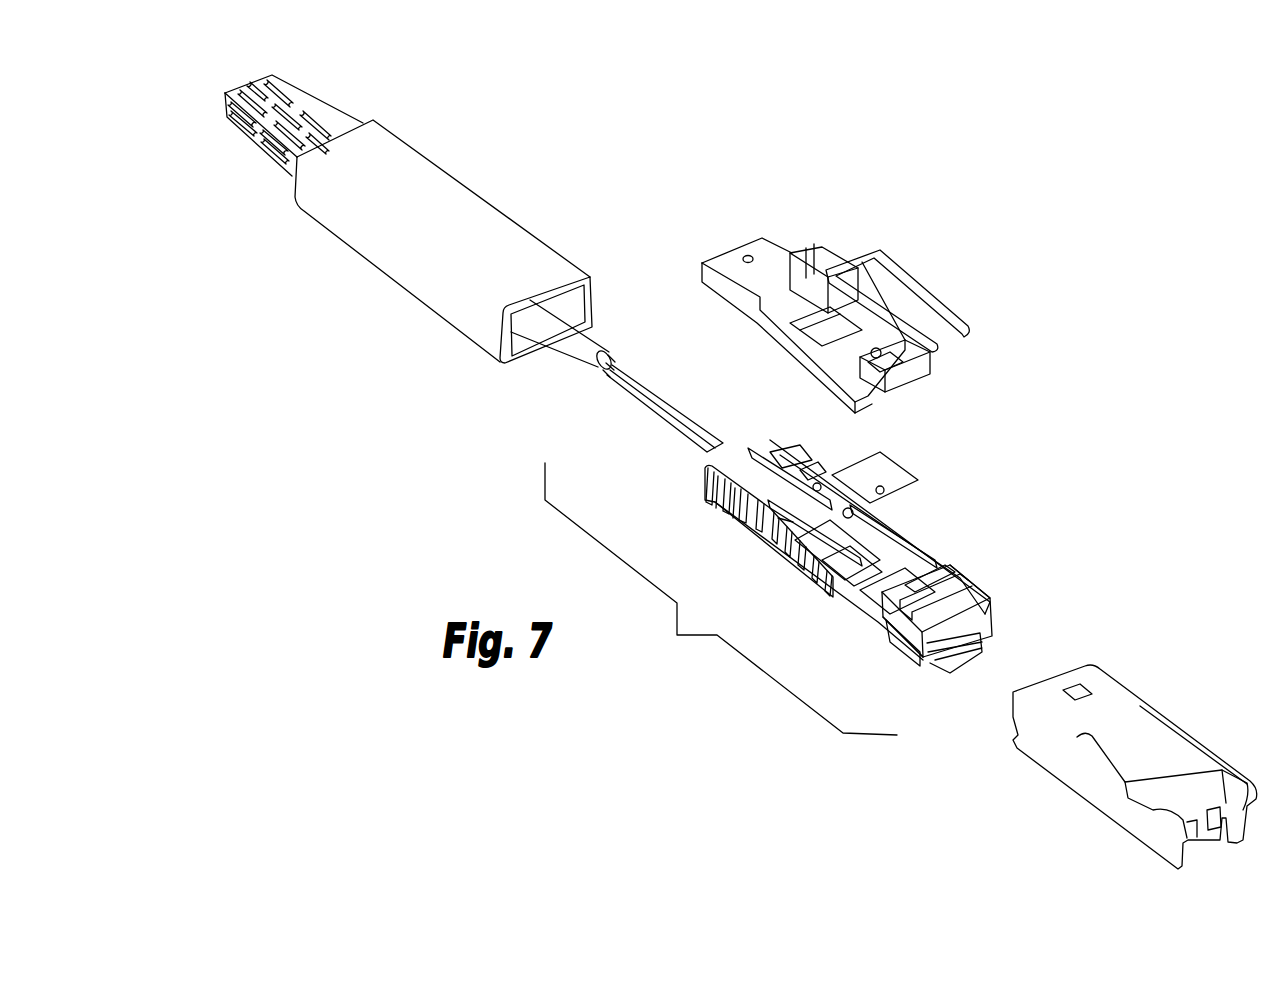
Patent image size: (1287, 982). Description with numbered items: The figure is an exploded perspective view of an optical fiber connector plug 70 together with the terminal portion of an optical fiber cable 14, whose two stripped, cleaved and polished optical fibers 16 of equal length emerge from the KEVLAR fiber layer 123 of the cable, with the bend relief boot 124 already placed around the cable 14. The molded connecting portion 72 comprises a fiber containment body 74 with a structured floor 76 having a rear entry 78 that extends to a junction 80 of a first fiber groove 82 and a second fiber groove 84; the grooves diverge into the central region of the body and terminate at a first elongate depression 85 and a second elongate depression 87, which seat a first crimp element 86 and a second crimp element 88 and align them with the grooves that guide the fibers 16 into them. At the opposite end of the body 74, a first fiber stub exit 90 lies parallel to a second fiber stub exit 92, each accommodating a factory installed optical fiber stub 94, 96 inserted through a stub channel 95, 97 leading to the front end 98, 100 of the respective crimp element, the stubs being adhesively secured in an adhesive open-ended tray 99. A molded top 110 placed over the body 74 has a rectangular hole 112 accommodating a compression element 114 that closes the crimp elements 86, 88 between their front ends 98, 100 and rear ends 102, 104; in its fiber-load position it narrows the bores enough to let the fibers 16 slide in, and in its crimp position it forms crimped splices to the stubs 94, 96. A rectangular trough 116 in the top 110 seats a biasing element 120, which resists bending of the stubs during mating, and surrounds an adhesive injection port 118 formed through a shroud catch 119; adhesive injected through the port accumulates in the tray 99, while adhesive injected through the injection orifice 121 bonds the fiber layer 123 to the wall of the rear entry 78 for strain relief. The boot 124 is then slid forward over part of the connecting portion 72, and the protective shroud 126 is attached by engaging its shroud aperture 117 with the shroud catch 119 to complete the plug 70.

The optical fiber connector plug 70 is at (699, 170).
The bend relief boot 124 is at (437, 191).
The optical fiber cable 14 is at (600, 337).
The KEVLAR fiber layer 123 is at (606, 370).
The optical fibers 16 is at (702, 450).
The molded top 110 is at (729, 261).
The injection orifice 121 is at (748, 253).
The compression element 114 is at (813, 262).
The rectangular hole 112 is at (796, 322).
The biasing element 120 is at (955, 314).
The rectangular trough 116 is at (904, 384).
The adhesive injection port 118 is at (882, 353).
The shroud catch 119 is at (892, 370).
The molded connecting portion 72 is at (734, 599).
The rear entry 78 is at (730, 477).
The junction 80 is at (742, 500).
The first stub channel 95 is at (960, 570).
The first optical fiber stub 94 is at (958, 572).
The second optical fiber stub 96 is at (935, 588).
The first fiber stub exit 90 is at (990, 612).
The second fiber stub exit 92 is at (936, 665).
The fiber containment body 74 is at (885, 642).
The adhesive open-ended tray 99 is at (887, 598).
The first fiber groove 82 is at (762, 466).
The second rear end 104 is at (778, 443).
The second crimp element 88 is at (810, 470).
The first rear end 102 is at (825, 484).
The first crimp element 86 is at (852, 478).
The front end of first crimp element 98 is at (876, 487).
The front end of second crimp element 100 is at (856, 516).
The first elongate depression 85 is at (917, 553).
The structured floor 76 is at (790, 521).
The second fiber groove 84 is at (798, 548).
The second elongate depression 87 is at (812, 585).
The second stub channel 97 is at (834, 596).
The protective shroud 126 is at (1112, 700).
The shroud aperture 117 is at (1068, 688).